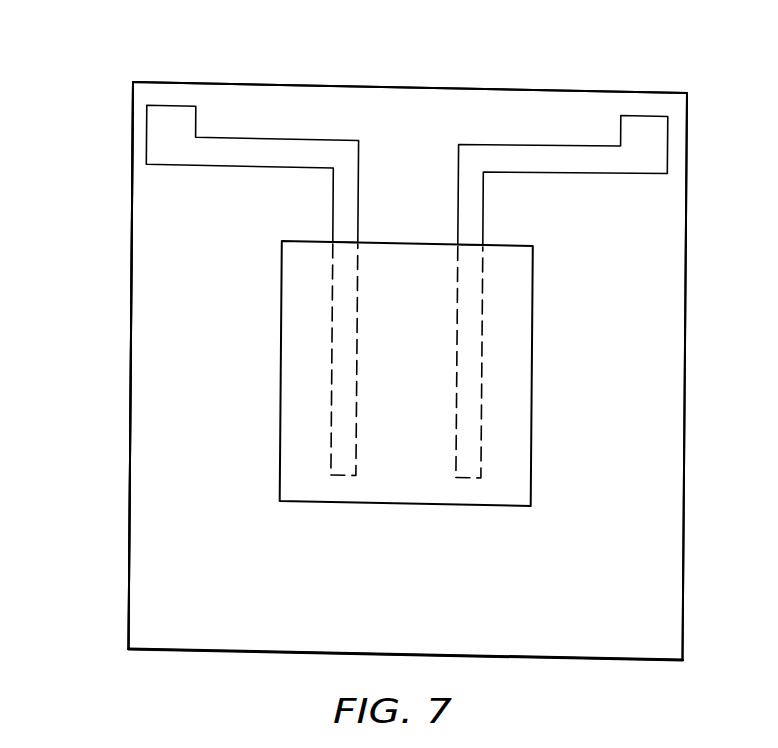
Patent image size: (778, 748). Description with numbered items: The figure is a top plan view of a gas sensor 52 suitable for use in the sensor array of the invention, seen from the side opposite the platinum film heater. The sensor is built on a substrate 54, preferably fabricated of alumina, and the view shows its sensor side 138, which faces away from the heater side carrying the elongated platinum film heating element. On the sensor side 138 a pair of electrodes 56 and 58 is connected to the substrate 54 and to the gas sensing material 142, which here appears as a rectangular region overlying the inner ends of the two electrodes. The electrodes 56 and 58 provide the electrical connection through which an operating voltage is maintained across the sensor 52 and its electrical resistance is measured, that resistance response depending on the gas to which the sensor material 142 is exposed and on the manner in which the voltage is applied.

The gas sensor 52 is at (193, 66).
The substrate 54 is at (129, 592).
The electrode 56 is at (223, 157).
The electrode 58 is at (565, 166).
The sensor side 138 is at (138, 280).
The sensor material 142 is at (287, 438).